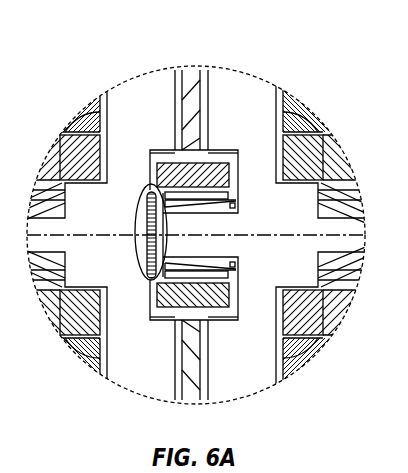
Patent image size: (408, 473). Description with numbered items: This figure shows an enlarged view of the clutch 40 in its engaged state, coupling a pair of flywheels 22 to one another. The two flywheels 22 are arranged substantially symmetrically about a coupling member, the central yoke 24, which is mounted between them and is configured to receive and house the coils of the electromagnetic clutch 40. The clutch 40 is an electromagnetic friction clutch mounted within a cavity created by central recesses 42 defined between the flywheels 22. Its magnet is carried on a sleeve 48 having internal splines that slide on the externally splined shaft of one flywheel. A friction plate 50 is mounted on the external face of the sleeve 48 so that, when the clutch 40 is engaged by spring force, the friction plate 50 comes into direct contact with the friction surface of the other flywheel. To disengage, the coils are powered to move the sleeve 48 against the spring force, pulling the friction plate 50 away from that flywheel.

The flywheels 22 is at (138, 363).
The central yoke 24 is at (192, 68).
The clutch 40 is at (150, 156).
The central recesses 42 is at (176, 147).
The sleeve 48 is at (157, 263).
The friction plate 50 is at (146, 197).